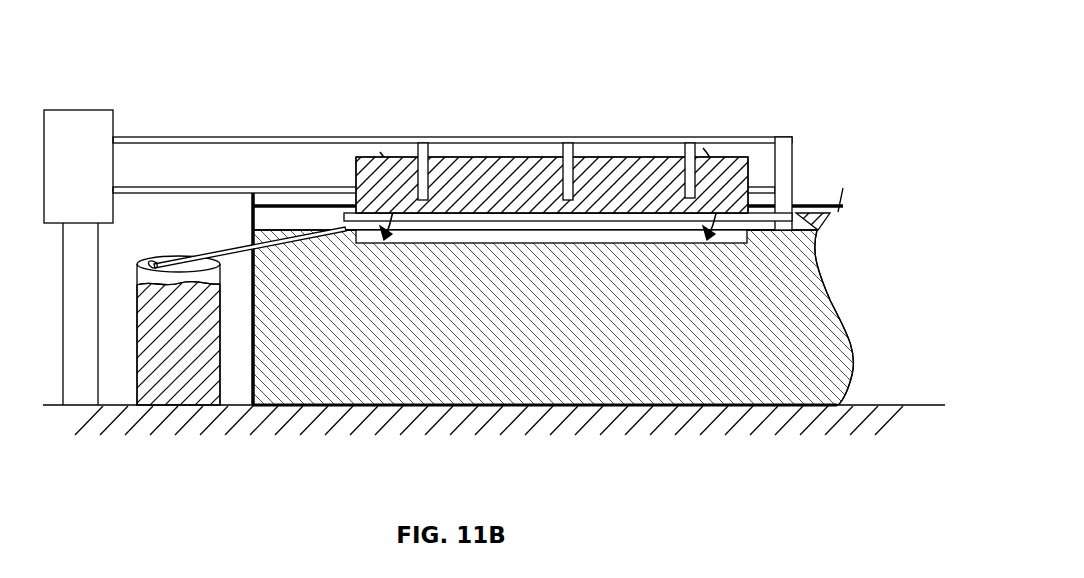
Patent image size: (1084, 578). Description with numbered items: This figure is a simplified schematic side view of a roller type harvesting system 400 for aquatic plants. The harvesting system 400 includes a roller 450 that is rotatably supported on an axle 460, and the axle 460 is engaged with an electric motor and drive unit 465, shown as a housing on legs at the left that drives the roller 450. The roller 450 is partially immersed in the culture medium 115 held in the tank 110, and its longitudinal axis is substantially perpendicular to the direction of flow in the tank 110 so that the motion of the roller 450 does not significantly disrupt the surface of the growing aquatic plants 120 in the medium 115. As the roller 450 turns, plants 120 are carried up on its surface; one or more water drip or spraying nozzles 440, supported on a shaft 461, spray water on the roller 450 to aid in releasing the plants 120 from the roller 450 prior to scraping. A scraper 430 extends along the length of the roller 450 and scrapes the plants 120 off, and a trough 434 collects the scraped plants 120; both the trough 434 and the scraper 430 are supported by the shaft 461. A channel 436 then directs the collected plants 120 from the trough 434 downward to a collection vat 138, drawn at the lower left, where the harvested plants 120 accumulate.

The harvesting system 400 is at (420, 56).
The electric motor and drive unit 465 is at (113, 135).
The axle 460 is at (225, 186).
The shaft 461 is at (418, 137).
The water drip or spraying nozzles 440 is at (443, 157).
The roller 450 is at (560, 143).
The trough 434 is at (344, 220).
The scraper 430 is at (349, 209).
The channel 436 is at (242, 239).
The collection vat 138 is at (153, 260).
The plants 120 is at (818, 212).
The culture medium 115 is at (483, 324).
The tank 110 is at (815, 205).